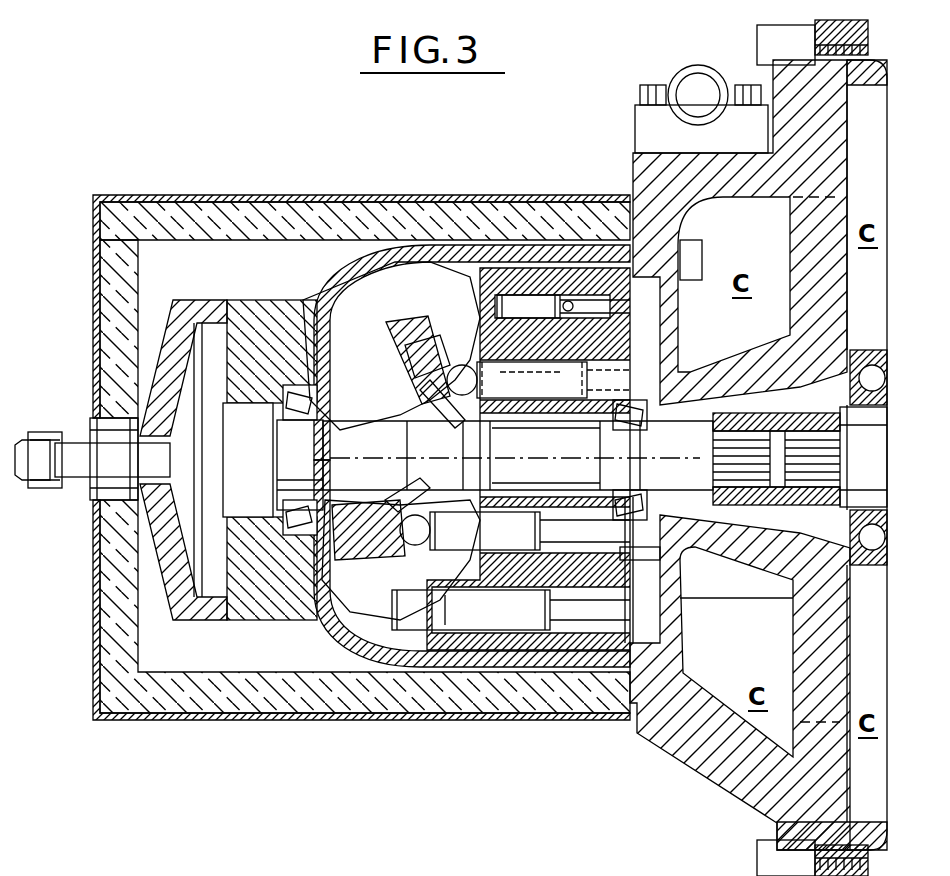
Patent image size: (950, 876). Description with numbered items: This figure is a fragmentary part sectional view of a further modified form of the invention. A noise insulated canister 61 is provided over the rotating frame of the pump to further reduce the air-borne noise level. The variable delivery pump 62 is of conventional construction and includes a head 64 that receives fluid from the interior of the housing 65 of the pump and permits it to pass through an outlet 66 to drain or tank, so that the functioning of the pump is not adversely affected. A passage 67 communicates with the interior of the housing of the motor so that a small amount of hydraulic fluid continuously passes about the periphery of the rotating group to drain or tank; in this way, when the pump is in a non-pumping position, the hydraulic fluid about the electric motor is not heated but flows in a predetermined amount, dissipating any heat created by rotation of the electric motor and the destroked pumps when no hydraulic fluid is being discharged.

The noise insulated canister 61 is at (207, 720).
The variable delivery pump 62 is at (330, 640).
The head 64 is at (180, 458).
The housing 65 is at (350, 246).
The outlet 66 is at (38, 440).
The passage 67 is at (672, 653).